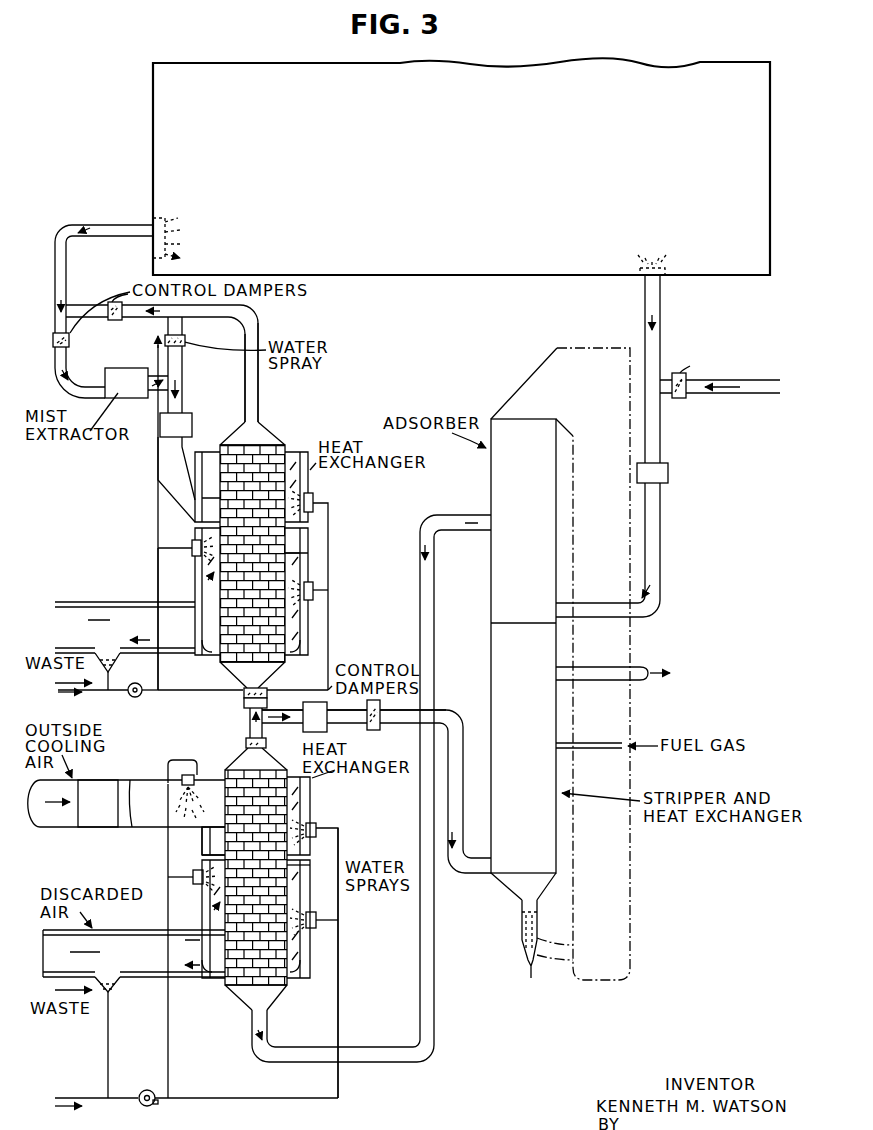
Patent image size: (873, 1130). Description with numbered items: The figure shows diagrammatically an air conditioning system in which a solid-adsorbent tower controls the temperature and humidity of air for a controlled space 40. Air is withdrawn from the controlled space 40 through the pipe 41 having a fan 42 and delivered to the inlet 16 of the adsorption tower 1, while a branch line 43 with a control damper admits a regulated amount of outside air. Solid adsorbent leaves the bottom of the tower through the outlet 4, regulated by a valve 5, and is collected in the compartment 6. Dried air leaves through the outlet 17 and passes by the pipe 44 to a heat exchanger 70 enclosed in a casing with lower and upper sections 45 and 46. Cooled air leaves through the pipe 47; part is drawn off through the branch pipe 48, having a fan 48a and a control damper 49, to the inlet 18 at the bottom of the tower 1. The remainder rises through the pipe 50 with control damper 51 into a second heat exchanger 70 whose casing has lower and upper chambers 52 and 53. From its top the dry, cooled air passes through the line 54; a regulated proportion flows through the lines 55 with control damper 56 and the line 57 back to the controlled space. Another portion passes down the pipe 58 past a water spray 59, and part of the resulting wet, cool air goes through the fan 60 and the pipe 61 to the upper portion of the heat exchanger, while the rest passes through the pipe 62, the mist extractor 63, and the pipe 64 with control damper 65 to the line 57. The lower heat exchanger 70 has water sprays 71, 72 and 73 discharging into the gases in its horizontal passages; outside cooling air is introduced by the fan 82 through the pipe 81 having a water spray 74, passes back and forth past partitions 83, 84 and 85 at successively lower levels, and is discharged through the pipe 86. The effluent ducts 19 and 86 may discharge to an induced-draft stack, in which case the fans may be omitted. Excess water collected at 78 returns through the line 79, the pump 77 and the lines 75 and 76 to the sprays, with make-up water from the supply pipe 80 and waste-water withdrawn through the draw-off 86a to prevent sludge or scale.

The controlled space 40 is at (462, 227).
The line 57 is at (105, 229).
The control damper 65 is at (53, 341).
The pipe 64 is at (58, 376).
The mist extractor 63 is at (118, 368).
The pipe 62 is at (150, 392).
The lines 55 is at (140, 317).
The control damper 56 is at (112, 320).
The line 54 is at (258, 385).
The pipe 58 is at (182, 330).
The water spray 59 is at (185, 341).
The fan 60 is at (190, 413).
The pipe 61 is at (184, 448).
The heat exchanger 70 is at (272, 445).
The upper chamber 53 is at (308, 486).
The water spray 72 is at (318, 497).
The partition 84 is at (300, 553).
The water spray 71 is at (316, 584).
The water spray 73 is at (192, 544).
The line 76 is at (158, 560).
The partition 85 is at (202, 600).
The pipe 86 is at (150, 602).
The water collection point 78 is at (118, 660).
The draw-off 86a is at (55, 684).
The line 79 is at (108, 1034).
The supply pipe 80 is at (90, 690).
The pump 77 is at (131, 696).
The line 75 is at (182, 696).
The pipe 50 is at (244, 694).
The control damper 51 is at (244, 705).
The lower chamber 52 is at (300, 657).
The pipe 47 is at (246, 738).
The branch pipe 48 is at (282, 723).
The fan 48a is at (328, 706).
The control damper 49 is at (378, 730).
The upper section 46 is at (310, 798).
The lower section 45 is at (306, 976).
The partition 83 is at (202, 840).
The fan 82 is at (95, 827).
The pipe 81 is at (132, 827).
The water spray 74 is at (194, 777).
The pipe 44 is at (267, 1025).
The outlet 17 is at (460, 527).
The inlet 18 is at (474, 870).
The adsorption tower 1 is at (491, 485).
The compartment 6 is at (632, 954).
The outlet 4 is at (522, 950).
The regulating valve 5 is at (522, 918).
The inlet 16 is at (598, 603).
The effluent duct 19 is at (598, 667).
The pipe 41 is at (645, 302).
The fan 42 is at (668, 466).
The branch line 43 is at (750, 380).